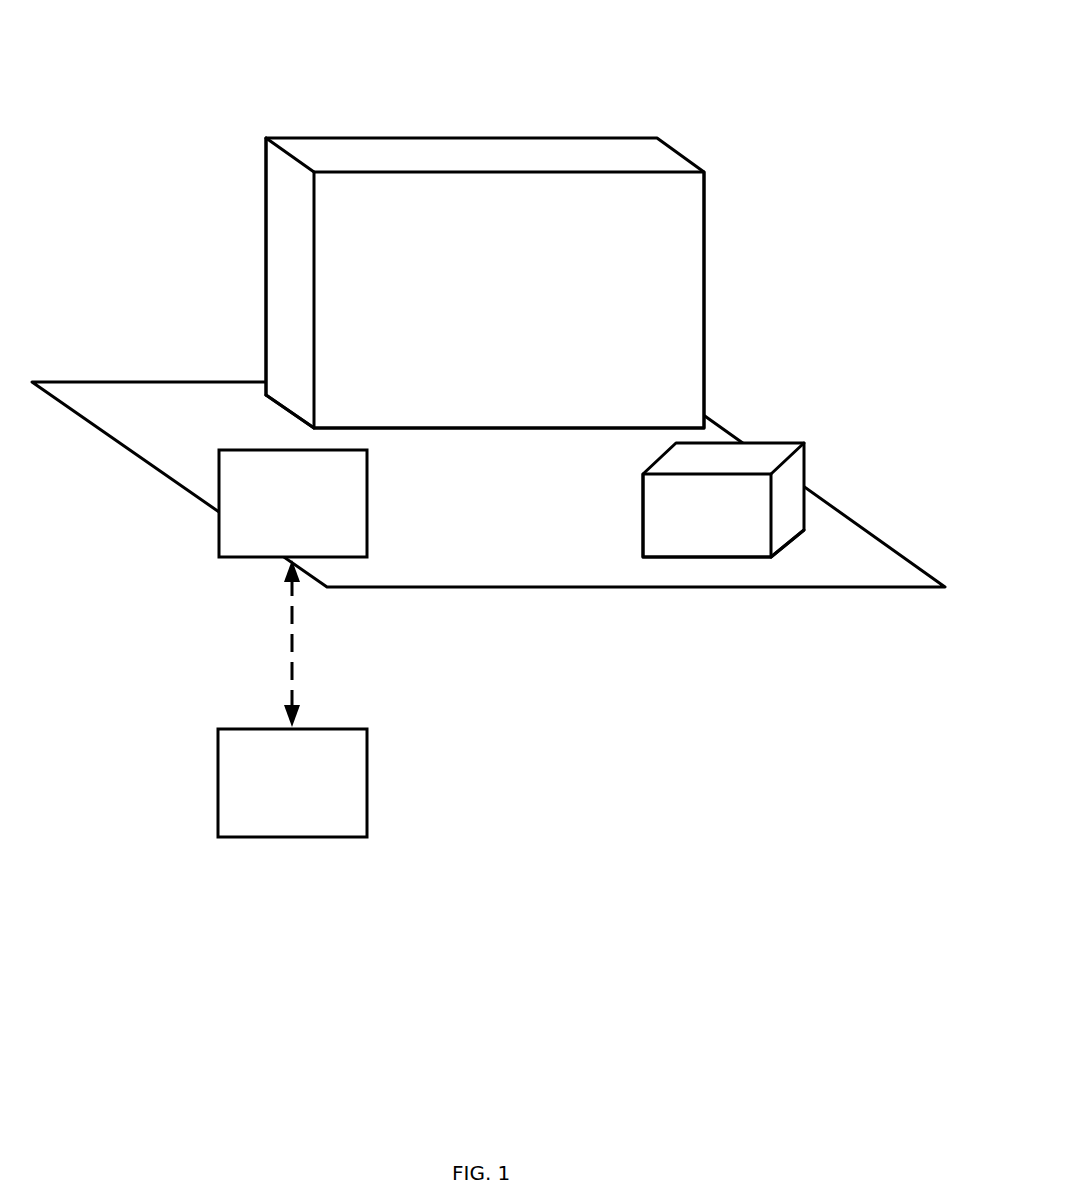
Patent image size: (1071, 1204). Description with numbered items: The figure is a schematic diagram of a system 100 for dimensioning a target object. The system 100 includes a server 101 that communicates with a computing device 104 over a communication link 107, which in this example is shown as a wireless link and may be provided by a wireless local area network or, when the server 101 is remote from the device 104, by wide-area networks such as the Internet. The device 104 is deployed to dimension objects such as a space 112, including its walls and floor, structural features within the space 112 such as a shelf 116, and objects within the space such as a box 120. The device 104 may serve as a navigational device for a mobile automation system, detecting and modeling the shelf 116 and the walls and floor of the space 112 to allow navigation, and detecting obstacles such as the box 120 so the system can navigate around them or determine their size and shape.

The system 100 is at (728, 962).
The server 101 is at (292, 783).
The computing device 104 is at (293, 503).
The communication link 107 is at (310, 643).
The space 112 is at (193, 170).
The shelf 116 is at (518, 138).
The box 120 is at (805, 465).